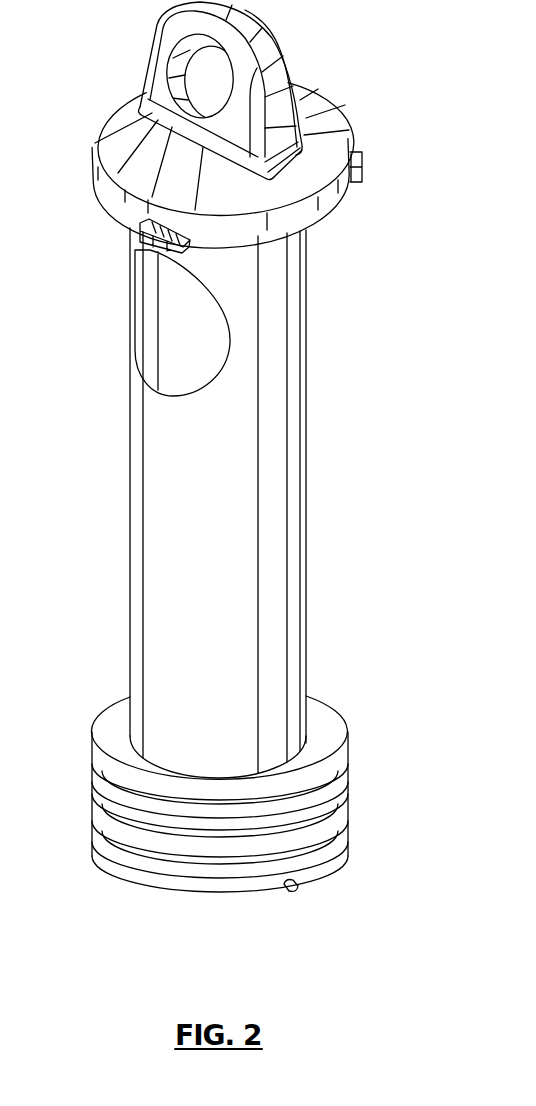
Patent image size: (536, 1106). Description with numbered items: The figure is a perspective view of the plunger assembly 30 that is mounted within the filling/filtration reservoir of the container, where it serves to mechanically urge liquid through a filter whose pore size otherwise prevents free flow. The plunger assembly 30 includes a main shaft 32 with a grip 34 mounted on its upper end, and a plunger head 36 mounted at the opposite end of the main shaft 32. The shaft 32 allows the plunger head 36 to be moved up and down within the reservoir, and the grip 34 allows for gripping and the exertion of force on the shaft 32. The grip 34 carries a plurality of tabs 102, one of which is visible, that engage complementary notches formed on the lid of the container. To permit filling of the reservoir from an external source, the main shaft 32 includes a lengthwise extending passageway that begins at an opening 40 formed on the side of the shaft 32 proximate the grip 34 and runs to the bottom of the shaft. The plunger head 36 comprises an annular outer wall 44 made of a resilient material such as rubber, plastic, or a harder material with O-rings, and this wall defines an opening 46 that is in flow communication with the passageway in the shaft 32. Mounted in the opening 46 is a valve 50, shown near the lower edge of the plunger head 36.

The plunger assembly 30 is at (251, 486).
The main shaft 32 is at (298, 617).
The grip 34 is at (354, 183).
The plunger head 36 is at (270, 828).
The opening 40 is at (135, 325).
The annular outer wall 44 is at (348, 820).
The opening 46 is at (240, 893).
The valve 50 is at (289, 886).
The tabs 102 is at (125, 232).